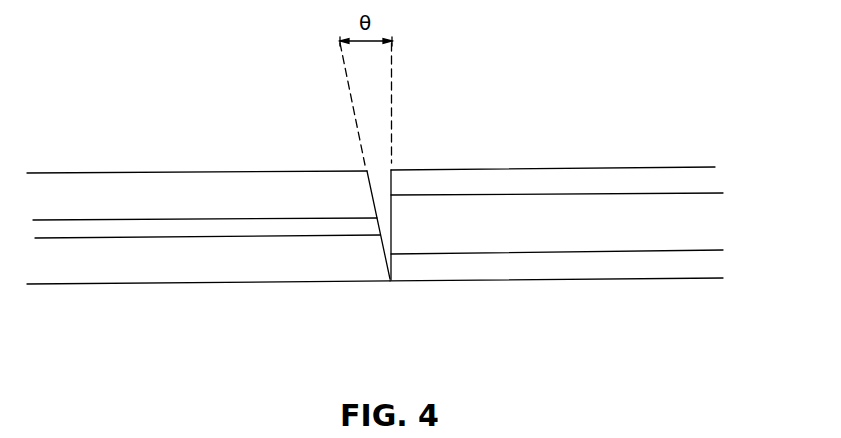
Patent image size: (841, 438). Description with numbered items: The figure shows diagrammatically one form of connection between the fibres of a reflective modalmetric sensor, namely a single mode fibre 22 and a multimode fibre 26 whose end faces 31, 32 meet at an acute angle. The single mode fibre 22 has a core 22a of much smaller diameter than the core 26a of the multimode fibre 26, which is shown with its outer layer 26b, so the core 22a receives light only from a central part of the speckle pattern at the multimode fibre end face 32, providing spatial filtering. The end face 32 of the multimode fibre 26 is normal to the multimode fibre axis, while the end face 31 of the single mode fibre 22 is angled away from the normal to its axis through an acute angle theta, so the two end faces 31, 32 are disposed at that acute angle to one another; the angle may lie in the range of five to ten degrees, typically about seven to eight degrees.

The single mode fibre 22 is at (270, 192).
The core of the single mode fibre 22a is at (118, 229).
The multimode fibre 26 is at (648, 175).
The core of the multimode fibre 26a is at (655, 227).
The lower skin of second panel 26b is at (542, 268).
The end face of the single mode fibre 31 is at (374, 205).
The end face of the multimode fibre 32 is at (390, 182).